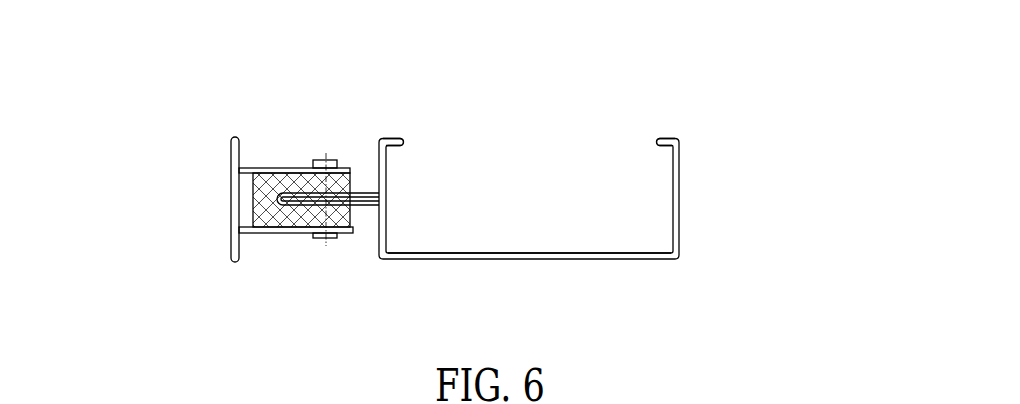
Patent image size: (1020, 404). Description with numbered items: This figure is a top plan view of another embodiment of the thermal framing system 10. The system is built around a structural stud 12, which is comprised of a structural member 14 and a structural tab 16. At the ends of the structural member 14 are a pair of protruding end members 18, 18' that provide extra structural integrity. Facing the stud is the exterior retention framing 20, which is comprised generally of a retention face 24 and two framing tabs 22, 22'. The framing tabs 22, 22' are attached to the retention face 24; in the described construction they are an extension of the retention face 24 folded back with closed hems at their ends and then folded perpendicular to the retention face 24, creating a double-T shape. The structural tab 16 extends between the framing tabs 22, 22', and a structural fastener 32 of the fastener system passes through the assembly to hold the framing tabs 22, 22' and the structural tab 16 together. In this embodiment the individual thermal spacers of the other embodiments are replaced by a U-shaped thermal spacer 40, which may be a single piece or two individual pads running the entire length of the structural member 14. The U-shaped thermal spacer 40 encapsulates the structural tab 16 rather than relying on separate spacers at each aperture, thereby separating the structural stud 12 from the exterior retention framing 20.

The thermal framing system 10 is at (700, 203).
The structural stud 12 is at (598, 113).
The structural member 14 is at (528, 250).
The structural tab 16 is at (359, 189).
The protruding end member 18 is at (401, 91).
The protruding end member 18' is at (678, 91).
The exterior retention framing 20 is at (253, 118).
The framing tab 22 is at (294, 104).
The framing tab 22' is at (302, 275).
The retention face 24 is at (230, 190).
The structural fastener 32 is at (308, 242).
The U-shaped thermal spacer 40 is at (210, 214).